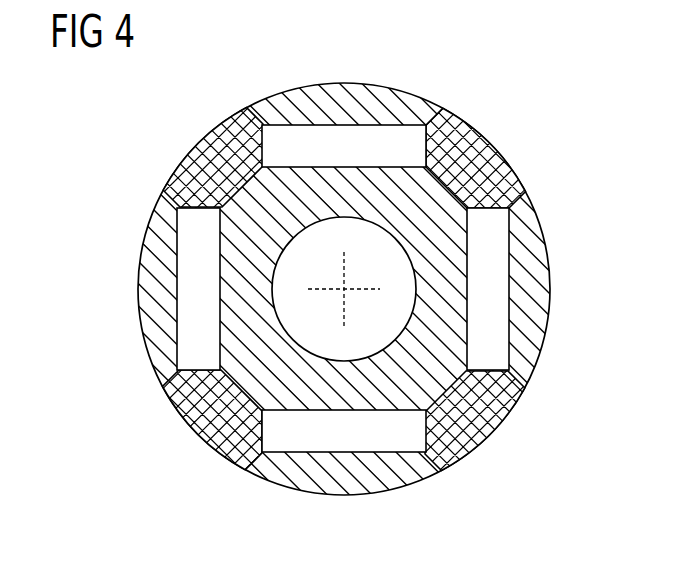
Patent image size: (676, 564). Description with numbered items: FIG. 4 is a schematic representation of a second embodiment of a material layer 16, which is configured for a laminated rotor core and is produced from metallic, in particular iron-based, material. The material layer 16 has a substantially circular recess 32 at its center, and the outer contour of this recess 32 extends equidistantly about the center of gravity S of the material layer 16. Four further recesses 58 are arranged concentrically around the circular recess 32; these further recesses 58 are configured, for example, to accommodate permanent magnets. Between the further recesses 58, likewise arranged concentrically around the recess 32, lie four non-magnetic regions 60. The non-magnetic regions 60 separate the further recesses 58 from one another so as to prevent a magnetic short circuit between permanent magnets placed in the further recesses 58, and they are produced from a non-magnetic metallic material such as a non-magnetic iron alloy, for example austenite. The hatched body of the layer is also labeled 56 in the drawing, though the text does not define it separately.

The material layer 16 is at (546, 152).
The substantially circular recess 32 is at (390, 317).
The hatched body 56 is at (262, 327).
The further recesses 58 is at (343, 140).
The non-magnetic regions 60 is at (492, 140).
The center of gravity S is at (346, 288).